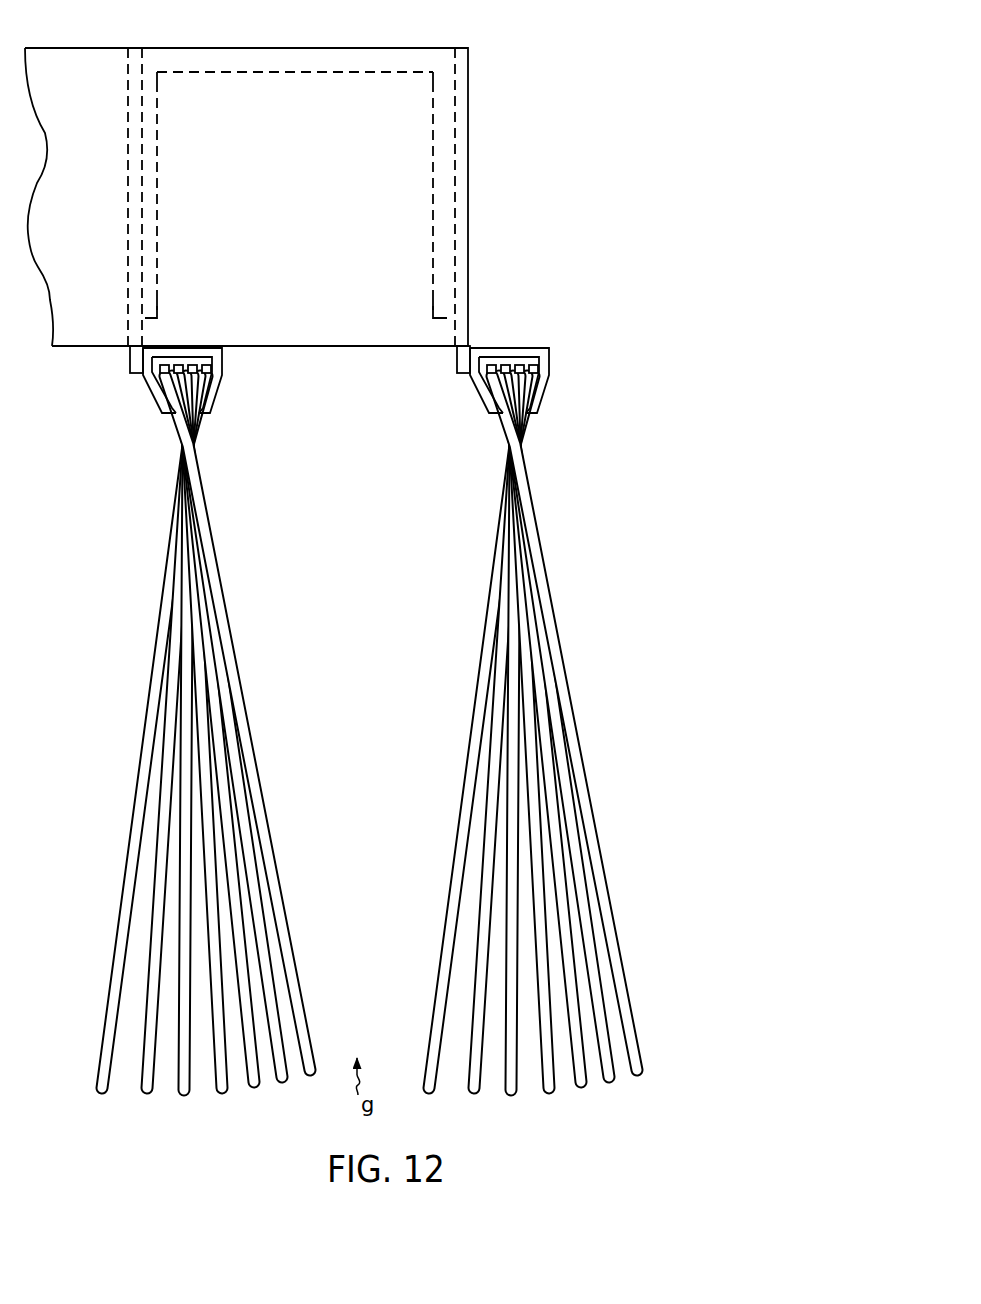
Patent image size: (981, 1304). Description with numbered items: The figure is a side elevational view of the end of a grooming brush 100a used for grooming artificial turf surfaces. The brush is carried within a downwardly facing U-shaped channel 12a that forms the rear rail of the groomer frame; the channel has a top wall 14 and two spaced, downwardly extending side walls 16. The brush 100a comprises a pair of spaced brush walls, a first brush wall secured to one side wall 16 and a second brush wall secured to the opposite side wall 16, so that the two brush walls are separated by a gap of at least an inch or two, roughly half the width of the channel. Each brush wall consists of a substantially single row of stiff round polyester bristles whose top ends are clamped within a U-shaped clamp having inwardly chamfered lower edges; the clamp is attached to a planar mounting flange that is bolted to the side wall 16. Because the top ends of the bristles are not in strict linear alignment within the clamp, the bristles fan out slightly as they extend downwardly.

The U-shaped channel 12a is at (296, 162).
The top wall 14 is at (178, 78).
The side walls 16 is at (163, 288).
The brush 100a is at (543, 693).